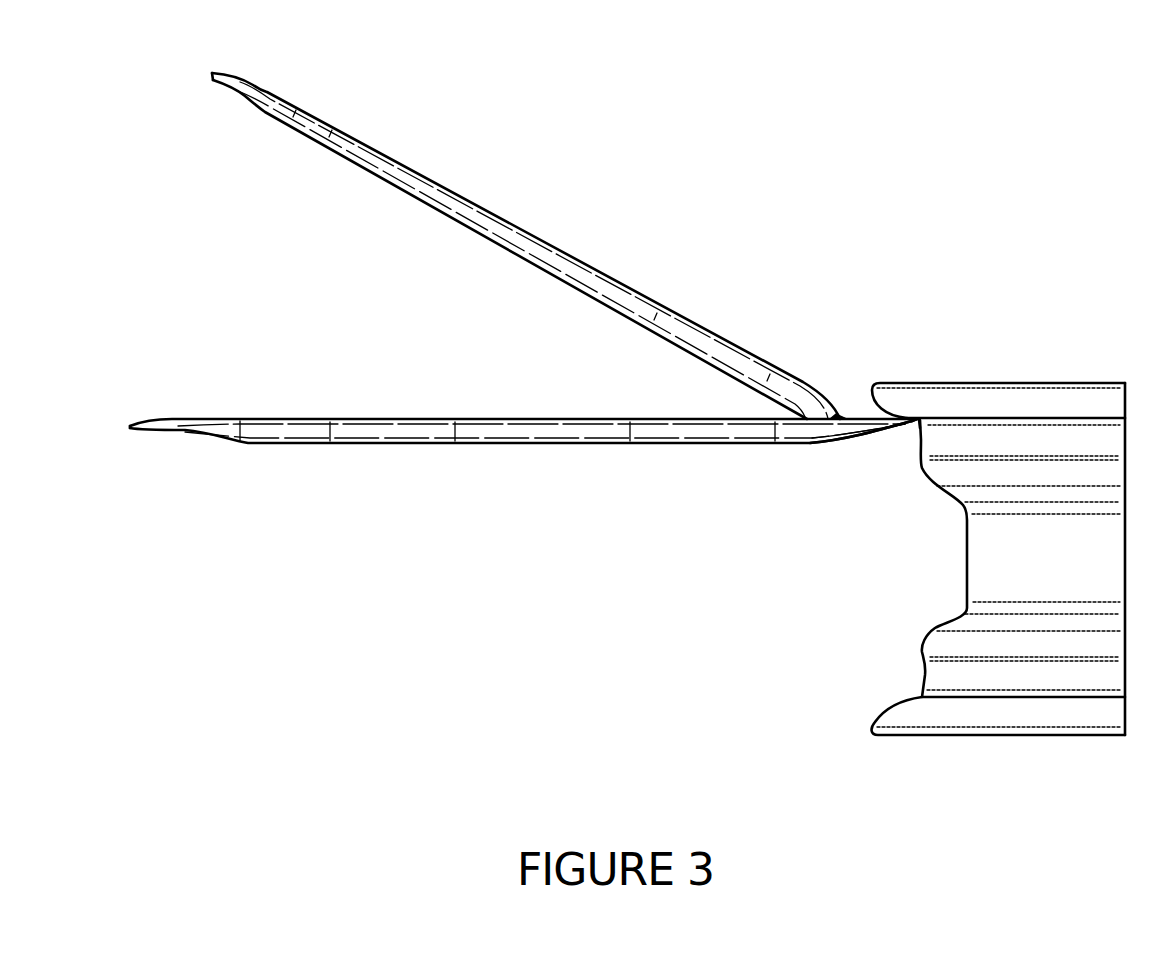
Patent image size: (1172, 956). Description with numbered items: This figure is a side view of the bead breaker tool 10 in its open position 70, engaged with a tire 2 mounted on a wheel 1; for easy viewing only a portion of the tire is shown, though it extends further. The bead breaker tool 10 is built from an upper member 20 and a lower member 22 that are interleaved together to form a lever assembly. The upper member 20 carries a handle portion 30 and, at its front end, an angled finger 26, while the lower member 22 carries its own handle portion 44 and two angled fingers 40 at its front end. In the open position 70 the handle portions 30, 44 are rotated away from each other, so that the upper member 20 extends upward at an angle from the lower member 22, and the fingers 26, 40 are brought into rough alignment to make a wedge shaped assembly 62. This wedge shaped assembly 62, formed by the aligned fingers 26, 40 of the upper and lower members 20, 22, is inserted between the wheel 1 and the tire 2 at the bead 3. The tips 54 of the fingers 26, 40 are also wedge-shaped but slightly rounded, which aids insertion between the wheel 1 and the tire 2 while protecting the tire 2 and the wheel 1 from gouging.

The wheel 1 is at (995, 504).
The tire 2 is at (932, 383).
The bead 3 is at (965, 415).
The bead breaker tool 10 is at (476, 317).
The open position 70 is at (476, 317).
The upper member 20 is at (529, 246).
The handle portion 30 is at (565, 268).
The lower member 22 is at (525, 496).
The handle portion 44 is at (474, 430).
The angled finger 26 is at (788, 468).
The angled fingers 40 is at (788, 468).
The wedge shaped assembly 62 is at (890, 432).
The tips 54 is at (918, 430).